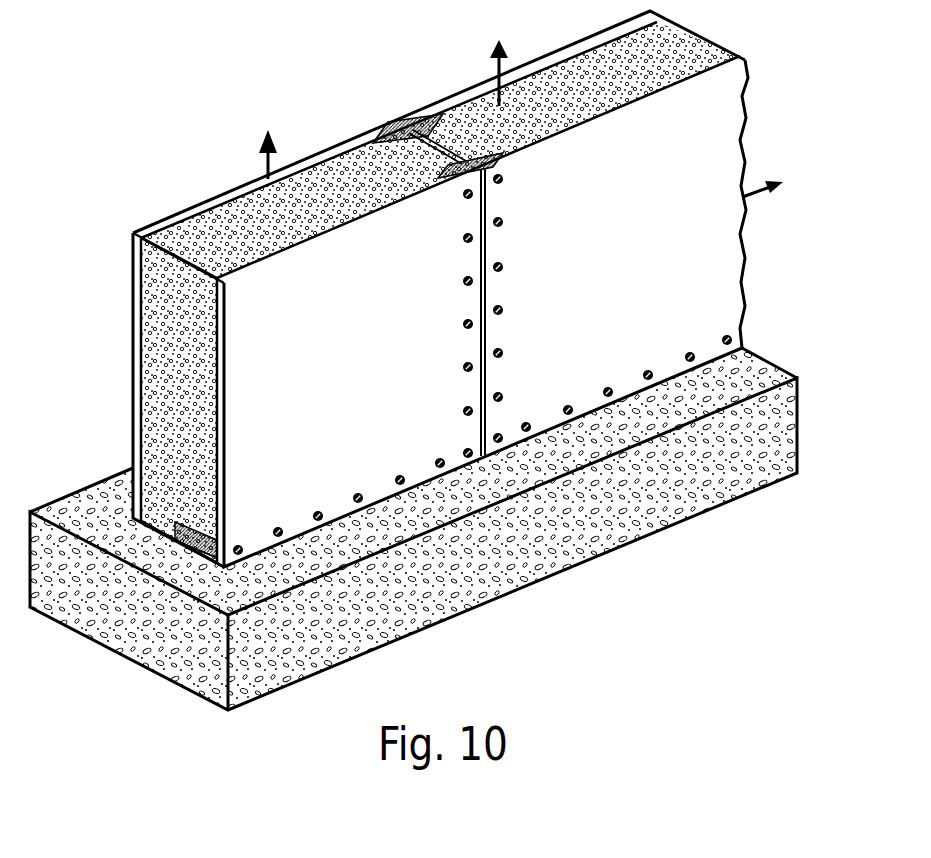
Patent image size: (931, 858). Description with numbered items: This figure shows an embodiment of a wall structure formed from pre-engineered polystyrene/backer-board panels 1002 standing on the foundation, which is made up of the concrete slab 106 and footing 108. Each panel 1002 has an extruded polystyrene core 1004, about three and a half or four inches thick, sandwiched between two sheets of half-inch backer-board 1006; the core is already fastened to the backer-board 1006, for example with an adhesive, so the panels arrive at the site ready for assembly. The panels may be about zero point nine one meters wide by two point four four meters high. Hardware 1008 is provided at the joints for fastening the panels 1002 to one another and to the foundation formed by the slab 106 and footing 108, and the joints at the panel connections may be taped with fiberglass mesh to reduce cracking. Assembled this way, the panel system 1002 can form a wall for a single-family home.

The polystyrene/backer-board panel 1002 is at (652, 13).
The extruded polystyrene core 1004 is at (160, 304).
The backer-board sheet 1006 is at (208, 203).
The hardware 1008 is at (405, 120).
The slab 106 is at (431, 529).
The footing 108 is at (693, 497).